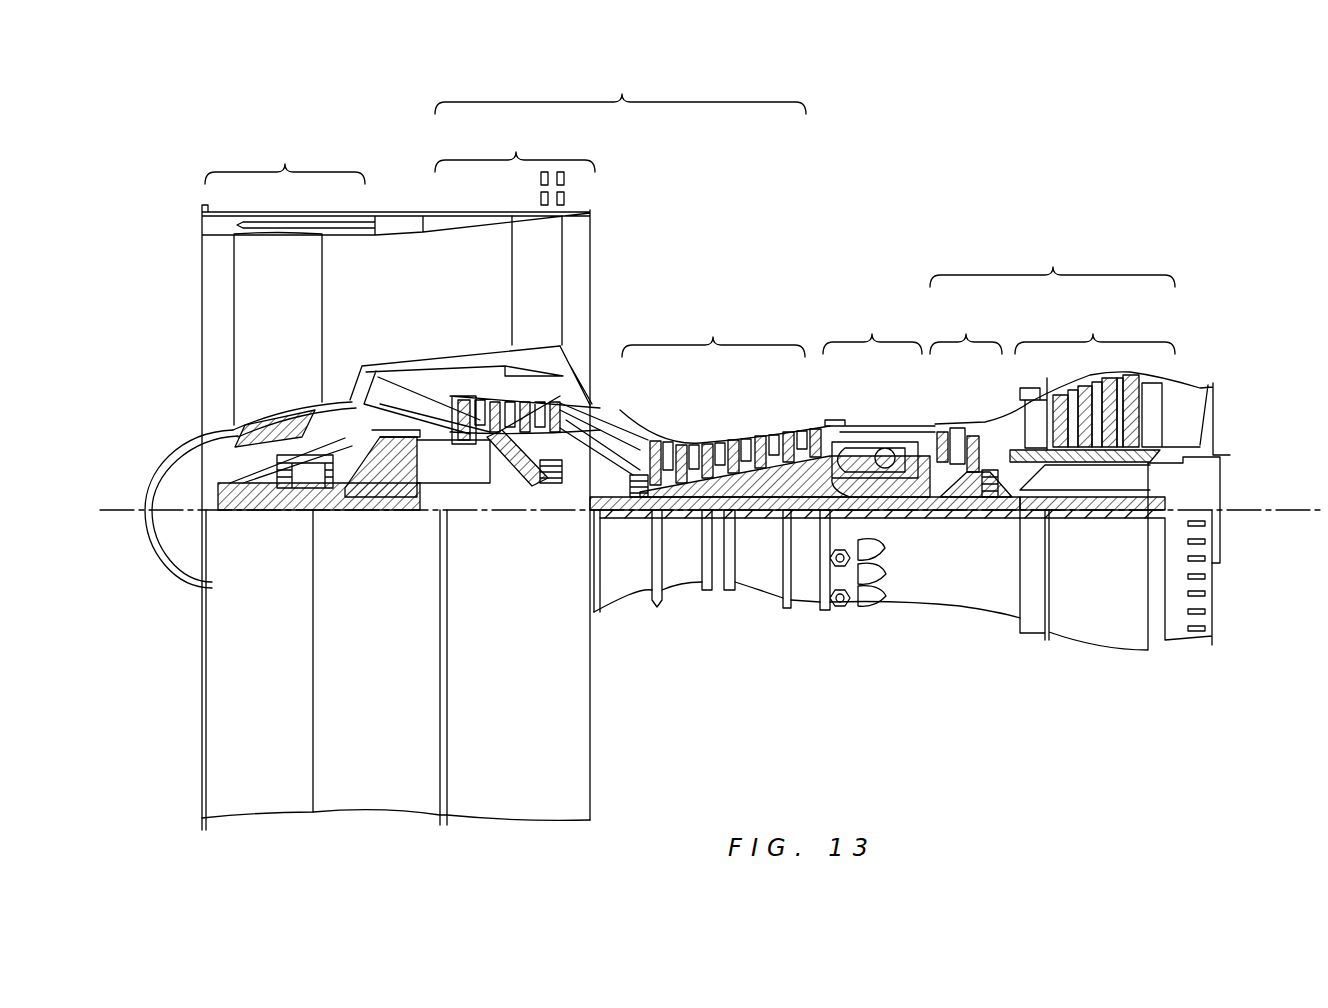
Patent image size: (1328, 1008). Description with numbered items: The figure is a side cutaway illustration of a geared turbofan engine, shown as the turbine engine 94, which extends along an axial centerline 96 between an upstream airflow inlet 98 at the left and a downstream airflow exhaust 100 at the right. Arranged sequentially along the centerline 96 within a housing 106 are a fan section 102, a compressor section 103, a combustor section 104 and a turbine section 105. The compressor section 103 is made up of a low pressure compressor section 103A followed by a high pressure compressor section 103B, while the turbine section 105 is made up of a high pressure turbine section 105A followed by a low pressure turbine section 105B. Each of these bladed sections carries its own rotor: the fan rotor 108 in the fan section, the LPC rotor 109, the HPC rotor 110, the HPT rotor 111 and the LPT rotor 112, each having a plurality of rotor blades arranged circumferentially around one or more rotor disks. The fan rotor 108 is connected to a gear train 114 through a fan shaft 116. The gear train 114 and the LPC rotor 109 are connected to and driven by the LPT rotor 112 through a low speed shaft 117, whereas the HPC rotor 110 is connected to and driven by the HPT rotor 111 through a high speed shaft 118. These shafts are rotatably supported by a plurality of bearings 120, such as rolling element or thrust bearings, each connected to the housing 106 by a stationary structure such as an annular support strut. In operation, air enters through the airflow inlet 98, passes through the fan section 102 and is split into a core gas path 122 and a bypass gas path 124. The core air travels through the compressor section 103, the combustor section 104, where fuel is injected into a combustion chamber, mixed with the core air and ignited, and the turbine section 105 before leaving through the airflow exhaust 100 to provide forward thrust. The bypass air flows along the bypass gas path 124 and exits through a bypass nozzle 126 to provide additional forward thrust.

The turbine engine 94 is at (186, 146).
The axial centerline 96 is at (1265, 520).
The airflow inlet 98 is at (202, 306).
The airflow exhaust 100 is at (1215, 418).
The fan section 102 is at (326, 477).
The compressor section 103 is at (621, 293).
The low pressure compressor section 103A is at (517, 282).
The high pressure compressor section 103B is at (775, 401).
The combustor section 104 is at (872, 331).
The turbine section 105 is at (1052, 373).
The high pressure turbine section 105A is at (980, 366).
The low pressure turbine section 105B is at (1105, 385).
The housing 106 is at (650, 665).
The fan rotor 108 is at (233, 432).
The LPC rotor 109 is at (498, 458).
The HPC rotor 110 is at (760, 505).
The HPT rotor 111 is at (945, 512).
The LPT rotor 112 is at (1093, 512).
The gear train 114 is at (408, 512).
The fan shaft 116 is at (270, 512).
The low speed shaft 117 is at (900, 515).
The high speed shaft 118 is at (893, 470).
The bearings 120 is at (322, 512).
The core gas path 122 is at (612, 438).
The bypass gas path 124 is at (454, 315).
The bypass nozzle 126 is at (592, 266).